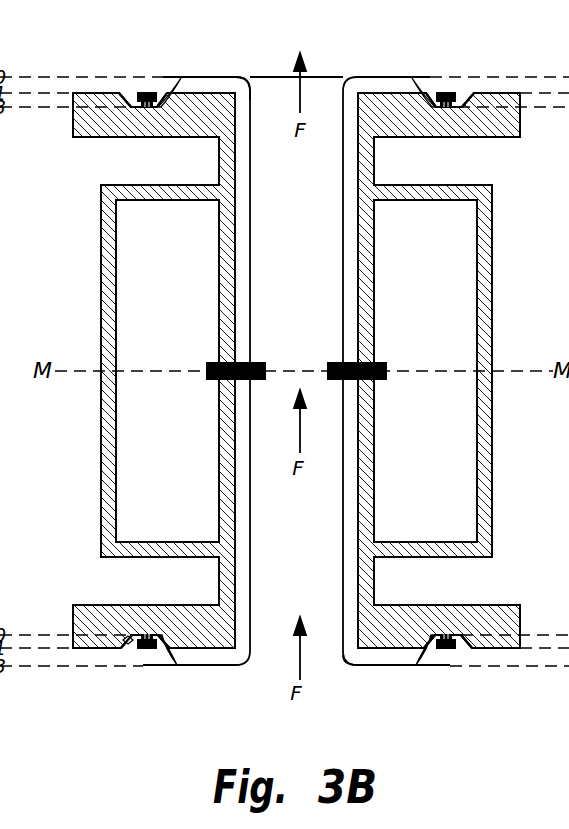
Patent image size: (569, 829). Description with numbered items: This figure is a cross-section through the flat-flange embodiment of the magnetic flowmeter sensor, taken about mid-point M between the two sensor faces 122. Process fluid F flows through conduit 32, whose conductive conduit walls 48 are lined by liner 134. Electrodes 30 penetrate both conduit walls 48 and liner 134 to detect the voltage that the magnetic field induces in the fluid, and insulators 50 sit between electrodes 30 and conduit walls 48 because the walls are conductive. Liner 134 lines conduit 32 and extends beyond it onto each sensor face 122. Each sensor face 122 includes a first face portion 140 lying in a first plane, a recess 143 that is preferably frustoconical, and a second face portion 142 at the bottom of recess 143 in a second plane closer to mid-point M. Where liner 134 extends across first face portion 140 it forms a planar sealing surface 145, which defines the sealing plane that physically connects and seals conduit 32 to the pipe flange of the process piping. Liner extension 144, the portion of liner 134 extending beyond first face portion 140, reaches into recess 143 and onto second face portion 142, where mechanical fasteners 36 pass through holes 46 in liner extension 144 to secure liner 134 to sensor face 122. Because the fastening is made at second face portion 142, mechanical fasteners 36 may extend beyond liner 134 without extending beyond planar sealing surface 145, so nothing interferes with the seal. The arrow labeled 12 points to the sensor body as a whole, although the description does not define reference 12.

The housing / bracket body 12 is at (507, 198).
The electrodes 30 is at (204, 375).
The conduit 32 is at (302, 228).
The mechanical fasteners 36 is at (146, 92).
The holes 46 is at (132, 108).
The conduit walls 48 is at (219, 273).
The insulators 50 is at (217, 358).
The sensor face 122 is at (506, 82).
The liner 134 is at (268, 75).
The first face portion 140 is at (218, 92).
The second face portion 142 is at (157, 103).
The recess 143 is at (168, 106).
The liner extension 144 is at (132, 100).
The planar sealing surface 145 is at (230, 76).